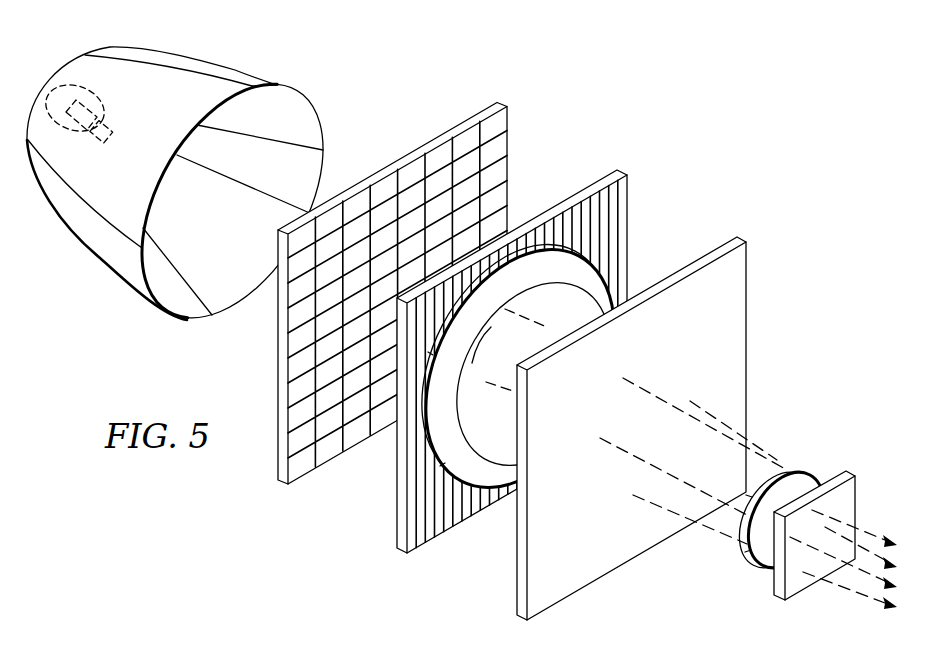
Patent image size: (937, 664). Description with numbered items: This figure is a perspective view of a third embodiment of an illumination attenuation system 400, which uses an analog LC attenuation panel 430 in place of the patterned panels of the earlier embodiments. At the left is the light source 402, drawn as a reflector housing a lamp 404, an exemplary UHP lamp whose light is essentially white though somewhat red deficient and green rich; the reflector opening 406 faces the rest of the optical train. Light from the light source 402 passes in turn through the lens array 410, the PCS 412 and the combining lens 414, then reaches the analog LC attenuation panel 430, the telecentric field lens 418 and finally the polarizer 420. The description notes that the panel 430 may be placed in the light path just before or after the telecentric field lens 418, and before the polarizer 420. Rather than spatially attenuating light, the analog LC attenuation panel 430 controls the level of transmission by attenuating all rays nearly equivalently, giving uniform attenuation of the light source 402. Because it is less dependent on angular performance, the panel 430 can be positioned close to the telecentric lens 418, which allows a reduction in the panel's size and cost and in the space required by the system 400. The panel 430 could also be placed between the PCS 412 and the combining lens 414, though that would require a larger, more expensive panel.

The illumination attenuation system 400 is at (619, 68).
The light source 402 is at (101, 257).
The lamp 404 is at (112, 110).
The reflector opening 406 is at (289, 100).
The lens array 410 is at (498, 103).
The PCS 412 is at (621, 173).
The combining lens 414 is at (466, 490).
The telecentric field lens 418 is at (796, 476).
The polarizer 420 is at (777, 597).
The analog LC attenuation panel 430 is at (739, 240).